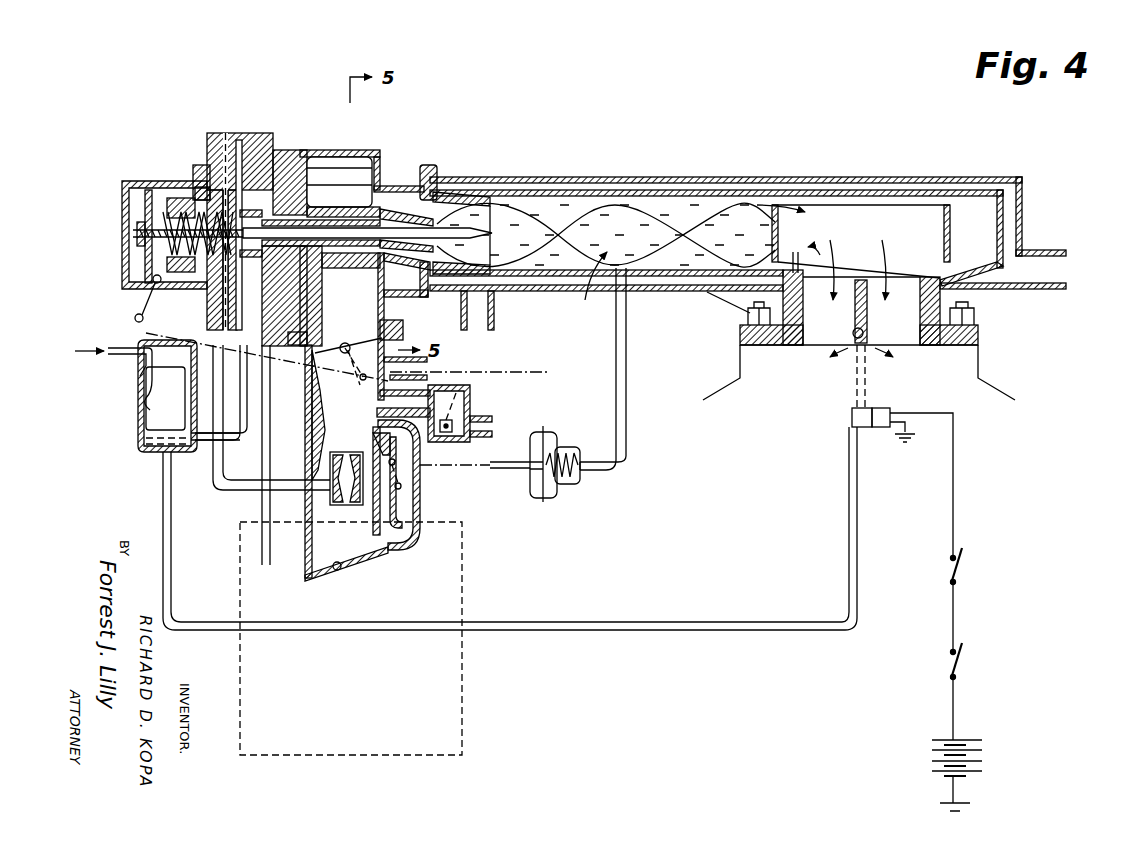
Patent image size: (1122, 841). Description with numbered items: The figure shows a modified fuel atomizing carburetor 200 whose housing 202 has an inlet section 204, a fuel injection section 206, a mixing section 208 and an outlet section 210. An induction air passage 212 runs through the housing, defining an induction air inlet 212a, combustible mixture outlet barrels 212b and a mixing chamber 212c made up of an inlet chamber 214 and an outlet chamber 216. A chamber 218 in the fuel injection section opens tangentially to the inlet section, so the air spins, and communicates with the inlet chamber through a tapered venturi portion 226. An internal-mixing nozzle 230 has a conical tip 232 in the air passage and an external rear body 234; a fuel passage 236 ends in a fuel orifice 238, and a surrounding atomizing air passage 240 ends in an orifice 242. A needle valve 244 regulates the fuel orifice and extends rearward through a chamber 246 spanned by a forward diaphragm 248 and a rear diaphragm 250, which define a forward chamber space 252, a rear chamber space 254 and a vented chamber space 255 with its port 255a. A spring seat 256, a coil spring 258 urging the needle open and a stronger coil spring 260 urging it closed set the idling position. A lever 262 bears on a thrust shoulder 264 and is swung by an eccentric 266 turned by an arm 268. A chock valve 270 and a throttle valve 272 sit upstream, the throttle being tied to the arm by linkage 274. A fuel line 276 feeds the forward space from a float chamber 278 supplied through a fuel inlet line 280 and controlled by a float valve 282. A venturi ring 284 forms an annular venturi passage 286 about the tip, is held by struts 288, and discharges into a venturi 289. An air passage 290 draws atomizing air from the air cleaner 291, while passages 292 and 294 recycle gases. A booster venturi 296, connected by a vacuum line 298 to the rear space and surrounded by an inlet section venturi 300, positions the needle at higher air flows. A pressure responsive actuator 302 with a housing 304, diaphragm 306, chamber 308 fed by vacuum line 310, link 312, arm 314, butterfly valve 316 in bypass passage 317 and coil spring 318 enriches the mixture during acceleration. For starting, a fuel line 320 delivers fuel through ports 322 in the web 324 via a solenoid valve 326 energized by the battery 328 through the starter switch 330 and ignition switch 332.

The modified carburetor 200 is at (537, 162).
The housing 202 is at (436, 158).
The inlet section 204 is at (313, 560).
The fuel injection section 206 is at (367, 150).
The mixing section 208 is at (668, 178).
The outlet section 210 is at (983, 339).
The induction air passage 212 is at (311, 570).
The induction air inlet 212a is at (384, 556).
The combustible mixture outlet barrels 212b is at (826, 348).
The mixing chamber 212c is at (588, 294).
The inlet chamber 214 is at (580, 186).
The outlet chamber 216 is at (990, 225).
The chamber 218 is at (331, 178).
The tapered venturi portion 226 is at (393, 275).
The fuel injection or atomizing nozzle 230 is at (206, 138).
The nozzle tip 232 is at (382, 231).
The rear nozzle body 234 is at (226, 133).
The fuel passage 236 is at (380, 244).
The fuel orifice 238 is at (441, 198).
The annular atomizing air passage 240 is at (370, 210).
The orifice 242 is at (437, 206).
The needle valve 244 is at (373, 207).
The chamber 246 is at (163, 192).
The forward diaphragm 248 is at (267, 133).
The rear diaphragm 250 is at (222, 304).
The forward chamber space 252 is at (273, 148).
The rear chamber space 254 is at (128, 263).
The chamber space 255 is at (223, 158).
The port 255a is at (235, 132).
The spring seat 256 is at (167, 207).
The coil spring 258 is at (312, 149).
The coil spring 260 is at (140, 283).
The lever 262 is at (170, 252).
The thrust shoulder 264 is at (137, 225).
The eccentric 266 is at (154, 282).
The arm 268 is at (135, 318).
The chock valve 270 is at (338, 571).
The throttle valve 272 is at (363, 342).
The linkage 274 is at (246, 352).
The fuel line 276 is at (244, 447).
The float chamber 278 is at (138, 389).
The fuel inlet line 280 is at (117, 357).
The float valve 282 is at (146, 400).
The venturi ring 284 is at (432, 163).
The annular venturi passage 286 is at (392, 250).
The struts 288 is at (422, 357).
The venturi 289 is at (465, 273).
The air passage 290 is at (266, 452).
The air cleaner 291 is at (466, 722).
The passage 292 is at (428, 373).
The passage 294 is at (497, 421).
The booster venturi 296 is at (360, 493).
The vacuum line 298 is at (233, 491).
The inlet section venturi 300 is at (320, 450).
The pressure responsive actuator 302 is at (558, 497).
The housing 304 is at (536, 496).
The flexible diaphragm 306 is at (545, 447).
The sealed chamber 308 is at (576, 479).
The vacuum line 310 is at (628, 377).
The link 312 is at (500, 470).
The arm 314 is at (398, 464).
The butterfly valve 316 is at (405, 486).
The passage 317 is at (411, 507).
The coil spring 318 is at (566, 456).
The fuel line 320 is at (612, 630).
The ports 322 is at (866, 333).
The web 324 is at (863, 282).
The solenoid valve 326 is at (851, 423).
The engine battery 328 is at (980, 748).
The starter switch 330 is at (965, 574).
The ignition switch 332 is at (968, 668).